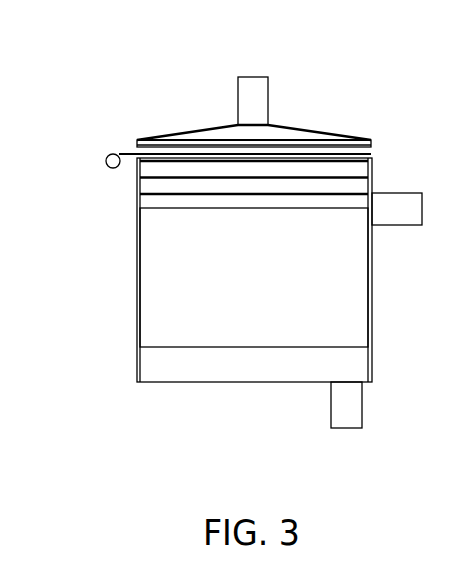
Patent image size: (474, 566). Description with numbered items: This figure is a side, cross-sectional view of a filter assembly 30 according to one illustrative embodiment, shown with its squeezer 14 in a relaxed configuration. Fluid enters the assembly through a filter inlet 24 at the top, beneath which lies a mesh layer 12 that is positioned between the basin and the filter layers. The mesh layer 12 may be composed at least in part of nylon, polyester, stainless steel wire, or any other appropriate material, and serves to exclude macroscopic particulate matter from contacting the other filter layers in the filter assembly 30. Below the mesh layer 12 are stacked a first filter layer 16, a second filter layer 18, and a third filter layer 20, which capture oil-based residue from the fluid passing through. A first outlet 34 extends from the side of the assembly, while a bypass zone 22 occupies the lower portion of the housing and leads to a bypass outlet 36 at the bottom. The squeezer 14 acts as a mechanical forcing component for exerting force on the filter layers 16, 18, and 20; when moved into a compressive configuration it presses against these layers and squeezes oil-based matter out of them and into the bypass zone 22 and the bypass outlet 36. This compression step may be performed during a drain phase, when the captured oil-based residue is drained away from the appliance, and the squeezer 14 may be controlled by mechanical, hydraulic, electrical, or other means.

The filter assembly 30 is at (105, 70).
The mesh layer 12 is at (133, 140).
The squeezer 14 is at (106, 161).
The first filter layer 16 is at (137, 172).
The second filter layer 18 is at (137, 192).
The third filter layer 20 is at (138, 268).
The bypass zone 22 is at (122, 353).
The filter inlet 24 is at (268, 102).
The first outlet 34 is at (395, 192).
The bypass outlet 36 is at (363, 410).